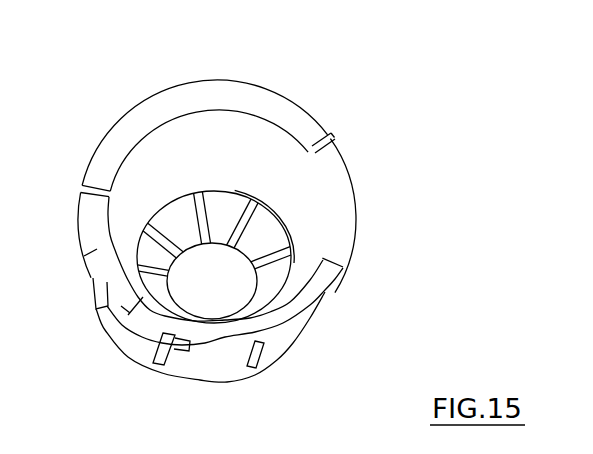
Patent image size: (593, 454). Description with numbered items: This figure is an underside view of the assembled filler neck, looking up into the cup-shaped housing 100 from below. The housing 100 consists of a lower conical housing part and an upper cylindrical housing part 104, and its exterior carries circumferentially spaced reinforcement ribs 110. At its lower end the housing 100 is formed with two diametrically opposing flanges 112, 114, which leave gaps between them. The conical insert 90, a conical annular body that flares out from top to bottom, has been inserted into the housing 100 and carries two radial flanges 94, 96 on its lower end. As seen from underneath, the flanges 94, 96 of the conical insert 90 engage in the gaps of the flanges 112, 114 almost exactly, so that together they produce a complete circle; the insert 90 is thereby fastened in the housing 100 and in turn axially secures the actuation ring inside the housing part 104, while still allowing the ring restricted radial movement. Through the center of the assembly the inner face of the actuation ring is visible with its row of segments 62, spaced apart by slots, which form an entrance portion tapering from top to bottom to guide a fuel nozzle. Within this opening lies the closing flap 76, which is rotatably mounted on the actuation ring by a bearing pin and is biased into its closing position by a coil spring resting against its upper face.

The conical insert 90 is at (272, 143).
The flange 114 is at (148, 116).
The radial flange 94 is at (341, 147).
The radial flange 96 is at (93, 243).
The flange 112 is at (313, 290).
The reinforcement ribs 110 is at (97, 308).
The cylindrical housing part 104 is at (127, 344).
The cup-shaped housing 100 is at (285, 361).
The closing flap 76 is at (222, 294).
The segments 62 is at (272, 224).